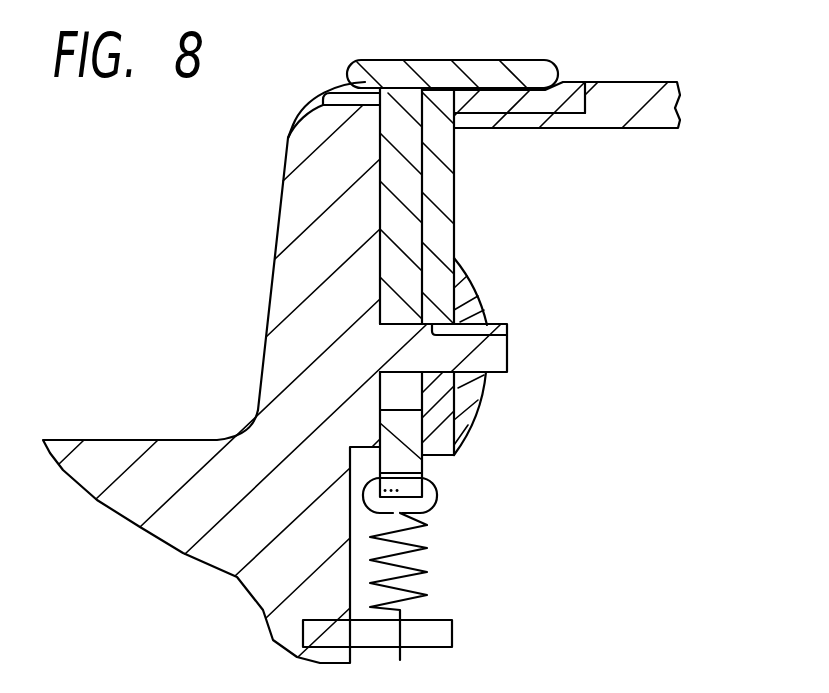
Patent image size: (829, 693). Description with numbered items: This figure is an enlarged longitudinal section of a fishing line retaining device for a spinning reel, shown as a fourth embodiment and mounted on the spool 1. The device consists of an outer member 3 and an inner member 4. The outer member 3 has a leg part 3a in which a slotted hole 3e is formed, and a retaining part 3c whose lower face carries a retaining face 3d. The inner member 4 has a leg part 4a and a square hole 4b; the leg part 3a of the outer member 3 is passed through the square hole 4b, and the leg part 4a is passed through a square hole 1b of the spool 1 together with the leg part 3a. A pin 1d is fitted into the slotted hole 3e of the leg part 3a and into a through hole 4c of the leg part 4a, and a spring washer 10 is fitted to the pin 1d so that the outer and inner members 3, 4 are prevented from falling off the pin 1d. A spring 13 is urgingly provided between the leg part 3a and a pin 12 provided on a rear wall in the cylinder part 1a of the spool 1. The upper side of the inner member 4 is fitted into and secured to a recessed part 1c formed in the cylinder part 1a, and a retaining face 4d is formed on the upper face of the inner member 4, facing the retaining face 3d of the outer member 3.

The spool 1 is at (272, 270).
The cylinder part 1a is at (643, 85).
The square hole 1b is at (523, 128).
The recessed part 1c is at (583, 105).
The pin 1d is at (495, 357).
The outer member 3 is at (373, 59).
The leg part 3a is at (385, 212).
The retaining part 3c is at (527, 62).
The retaining face 3d is at (483, 92).
The slotted hole 3e is at (392, 400).
The inner member 4 is at (568, 82).
The leg part 4a is at (450, 232).
The square hole 4b is at (423, 97).
The through hole 4c is at (507, 335).
The retaining face 4d is at (493, 88).
The spring washer 10 is at (477, 290).
The pin 12 is at (447, 633).
The spring 13 is at (413, 548).